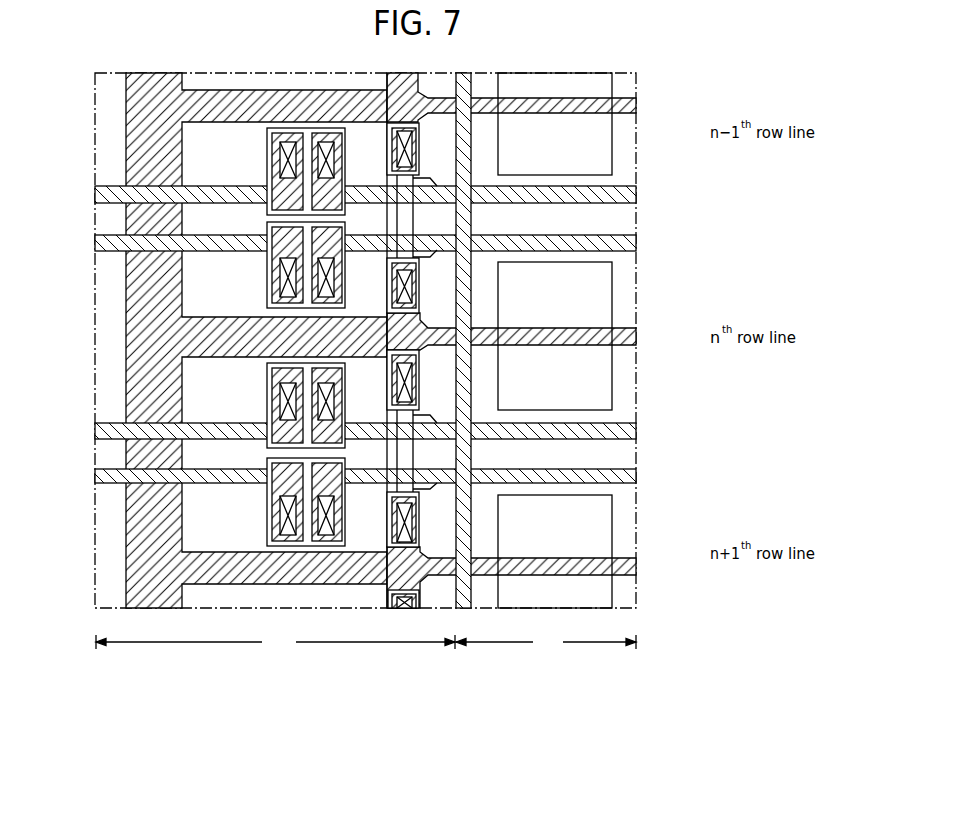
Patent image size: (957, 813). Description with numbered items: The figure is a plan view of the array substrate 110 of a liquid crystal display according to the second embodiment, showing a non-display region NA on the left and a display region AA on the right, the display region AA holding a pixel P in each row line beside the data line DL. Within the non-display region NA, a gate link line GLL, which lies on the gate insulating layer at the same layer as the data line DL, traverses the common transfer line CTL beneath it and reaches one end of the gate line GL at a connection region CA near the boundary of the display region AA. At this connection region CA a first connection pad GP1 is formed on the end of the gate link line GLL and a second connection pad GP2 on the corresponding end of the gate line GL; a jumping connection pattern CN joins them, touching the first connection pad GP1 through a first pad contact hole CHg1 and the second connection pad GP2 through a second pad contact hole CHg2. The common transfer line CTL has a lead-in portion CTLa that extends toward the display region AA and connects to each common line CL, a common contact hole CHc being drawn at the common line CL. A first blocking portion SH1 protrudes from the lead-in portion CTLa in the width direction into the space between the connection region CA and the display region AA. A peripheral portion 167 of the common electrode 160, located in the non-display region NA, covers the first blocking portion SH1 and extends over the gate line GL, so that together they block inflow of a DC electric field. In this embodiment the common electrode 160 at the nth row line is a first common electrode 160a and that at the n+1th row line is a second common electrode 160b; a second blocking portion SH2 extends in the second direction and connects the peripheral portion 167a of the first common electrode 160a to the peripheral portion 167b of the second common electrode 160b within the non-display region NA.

The first pad contact hole CHg1 is at (316, 156).
The second pad contact hole CHg2 is at (282, 162).
The second blocking portion SH2 is at (397, 219).
The peripheral portion 167 is at (438, 260).
The data line DL is at (473, 219).
The common electrode 160 is at (578, 246).
The gate line GL is at (636, 197).
The gate link line GLL is at (95, 194).
The connection region CA is at (258, 258).
The first connection pad GP1 is at (270, 285).
The second connection pad GP2 is at (339, 277).
The connection pattern CN is at (258, 306).
The common contact hole CHc is at (415, 287).
The first blocking portion SH1 is at (421, 304).
The common line CL is at (637, 336).
The common transfer line CTL is at (126, 390).
The lead-in portion CTLa is at (227, 330).
The peripheral portion of the first common electrode 167a is at (438, 398).
The peripheral portion of the second common electrode 167b is at (437, 513).
The first common electrode 160a is at (548, 425).
The second common electrode 160b is at (607, 480).
The pixel P is at (563, 153).
The non-display region NA is at (275, 643).
The display region AA is at (546, 643).
The array substrate 110 is at (359, 712).